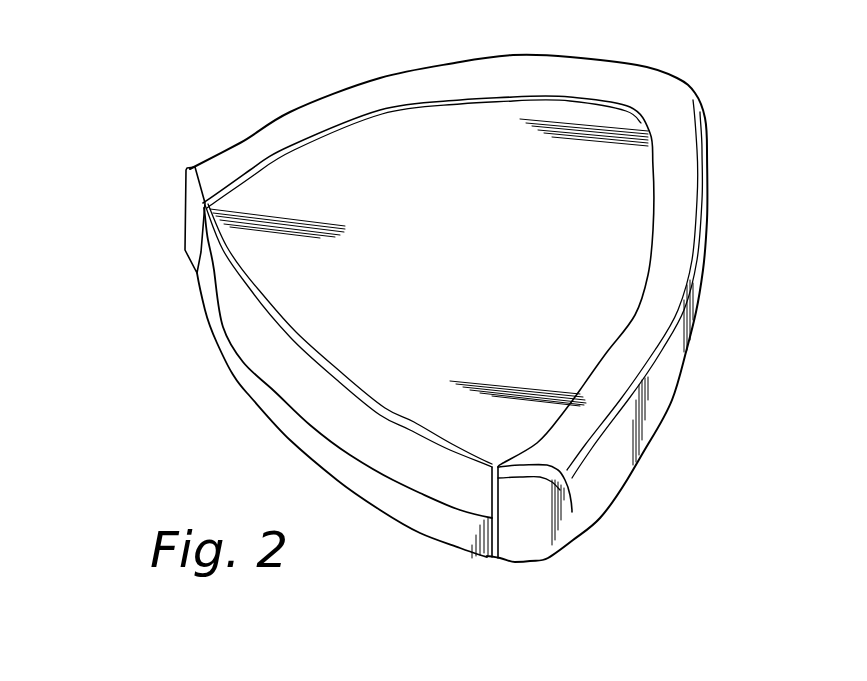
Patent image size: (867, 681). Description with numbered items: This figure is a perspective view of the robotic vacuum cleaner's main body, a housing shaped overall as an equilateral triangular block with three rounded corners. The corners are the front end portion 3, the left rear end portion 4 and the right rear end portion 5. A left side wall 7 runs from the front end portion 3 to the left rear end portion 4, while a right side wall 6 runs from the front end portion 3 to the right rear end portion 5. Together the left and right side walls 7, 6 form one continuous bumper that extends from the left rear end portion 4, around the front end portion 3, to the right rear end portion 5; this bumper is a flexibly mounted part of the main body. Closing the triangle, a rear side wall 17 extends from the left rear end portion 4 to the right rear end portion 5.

The front end portion 3 is at (665, 102).
The left rear end portion 4 is at (248, 200).
The right rear end portion 5 is at (493, 440).
The right side wall 6 is at (682, 322).
The left side wall 7 is at (377, 78).
The rear side wall 17 is at (273, 398).